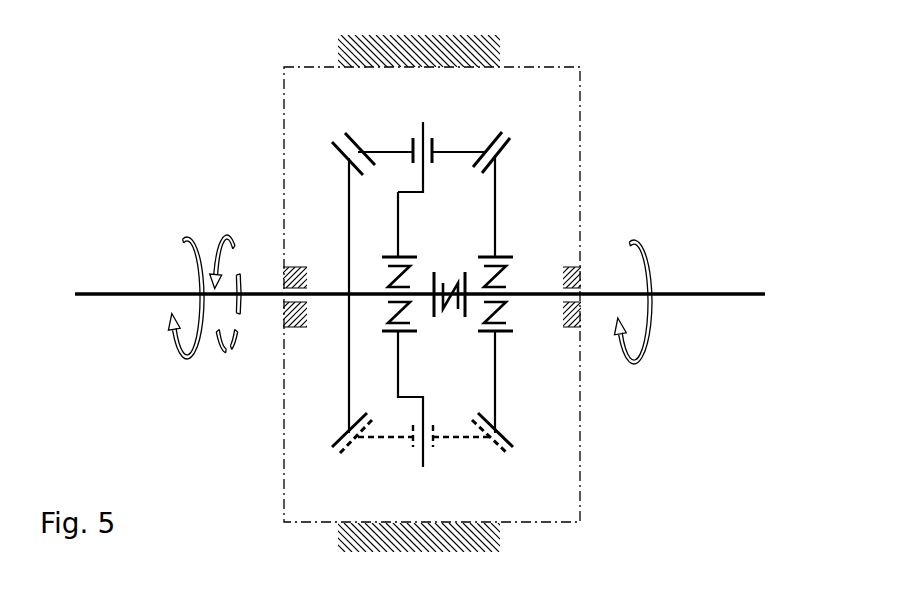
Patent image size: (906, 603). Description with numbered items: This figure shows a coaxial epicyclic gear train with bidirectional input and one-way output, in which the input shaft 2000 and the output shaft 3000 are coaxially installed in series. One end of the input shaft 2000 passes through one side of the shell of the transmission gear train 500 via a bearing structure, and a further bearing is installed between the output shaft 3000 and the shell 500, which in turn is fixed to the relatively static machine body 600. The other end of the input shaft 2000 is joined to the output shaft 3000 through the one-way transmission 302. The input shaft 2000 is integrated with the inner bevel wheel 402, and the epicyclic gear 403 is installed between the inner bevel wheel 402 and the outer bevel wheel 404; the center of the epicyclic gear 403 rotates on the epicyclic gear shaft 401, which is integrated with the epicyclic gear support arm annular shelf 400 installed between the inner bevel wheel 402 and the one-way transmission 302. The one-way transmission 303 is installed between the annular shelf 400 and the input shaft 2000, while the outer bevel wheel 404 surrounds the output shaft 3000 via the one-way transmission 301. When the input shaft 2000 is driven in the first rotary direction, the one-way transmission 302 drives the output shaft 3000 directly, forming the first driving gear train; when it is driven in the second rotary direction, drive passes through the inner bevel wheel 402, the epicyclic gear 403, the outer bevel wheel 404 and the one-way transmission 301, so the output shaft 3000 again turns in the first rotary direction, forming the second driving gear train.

The machine body 600 is at (417, 54).
The shell of the transmission gear train 500 is at (282, 195).
The input shaft 2000 is at (118, 292).
The output shaft 3000 is at (698, 288).
The inner bevel wheel 402 is at (333, 150).
The epicyclic gear shaft 401 is at (427, 132).
The epicyclic gear support arm annular shelf 400 is at (398, 220).
The epicyclic gear 403 is at (490, 140).
The outer bevel wheel 404 is at (510, 145).
The one-way transmission 303 is at (415, 270).
The one-way transmission 302 is at (443, 308).
The one-way transmission 301 is at (505, 308).